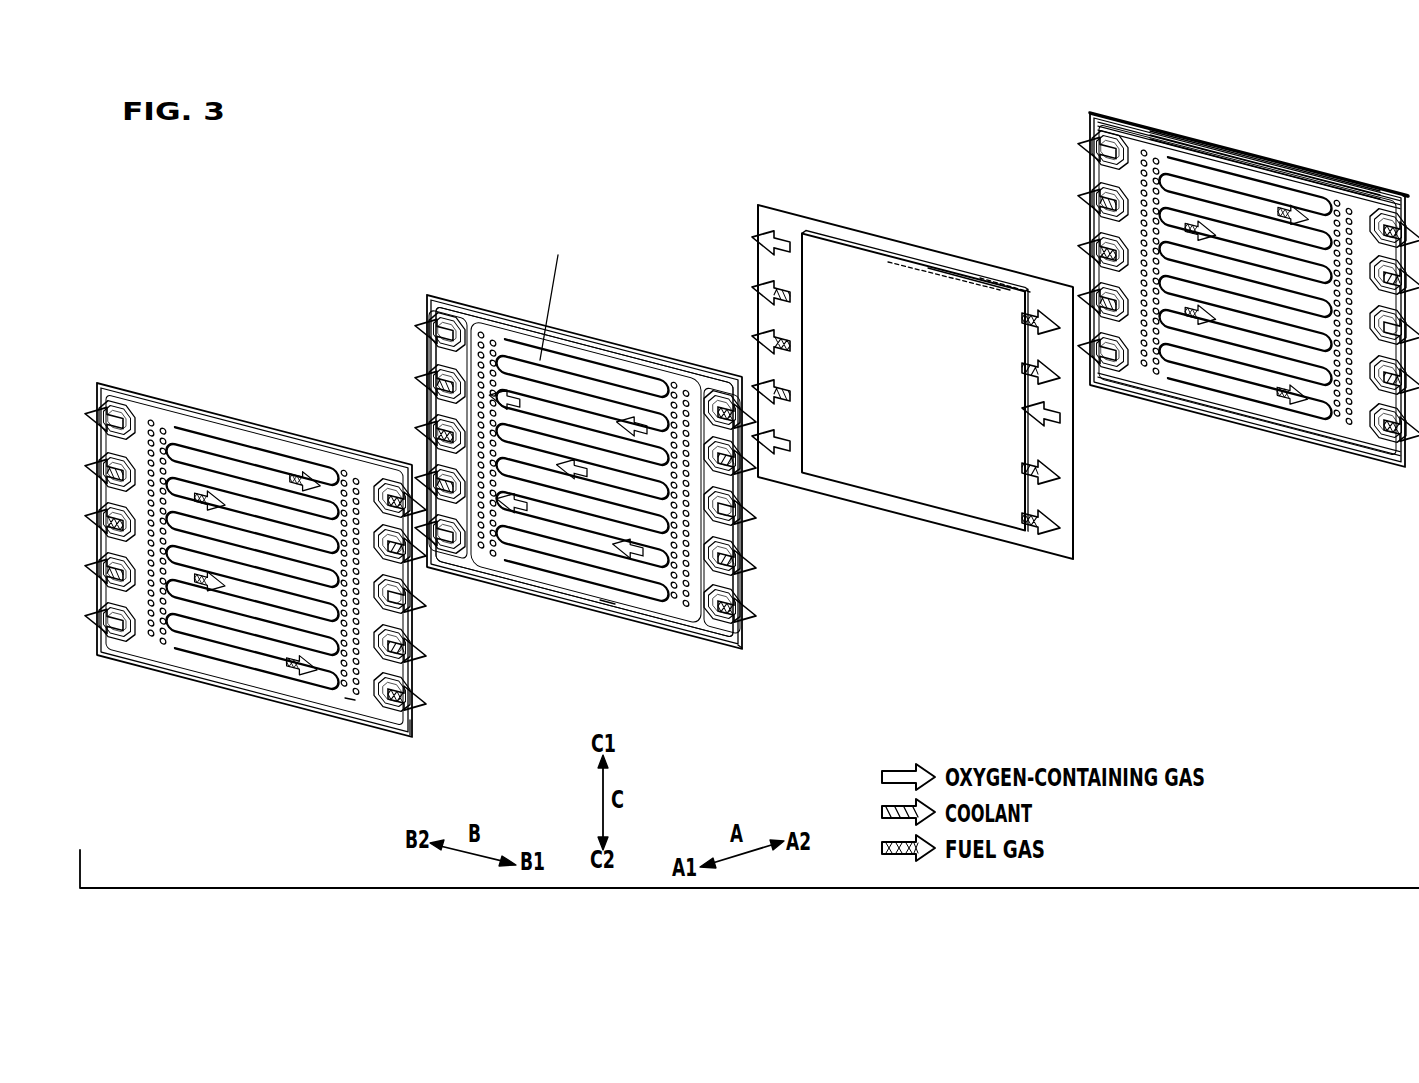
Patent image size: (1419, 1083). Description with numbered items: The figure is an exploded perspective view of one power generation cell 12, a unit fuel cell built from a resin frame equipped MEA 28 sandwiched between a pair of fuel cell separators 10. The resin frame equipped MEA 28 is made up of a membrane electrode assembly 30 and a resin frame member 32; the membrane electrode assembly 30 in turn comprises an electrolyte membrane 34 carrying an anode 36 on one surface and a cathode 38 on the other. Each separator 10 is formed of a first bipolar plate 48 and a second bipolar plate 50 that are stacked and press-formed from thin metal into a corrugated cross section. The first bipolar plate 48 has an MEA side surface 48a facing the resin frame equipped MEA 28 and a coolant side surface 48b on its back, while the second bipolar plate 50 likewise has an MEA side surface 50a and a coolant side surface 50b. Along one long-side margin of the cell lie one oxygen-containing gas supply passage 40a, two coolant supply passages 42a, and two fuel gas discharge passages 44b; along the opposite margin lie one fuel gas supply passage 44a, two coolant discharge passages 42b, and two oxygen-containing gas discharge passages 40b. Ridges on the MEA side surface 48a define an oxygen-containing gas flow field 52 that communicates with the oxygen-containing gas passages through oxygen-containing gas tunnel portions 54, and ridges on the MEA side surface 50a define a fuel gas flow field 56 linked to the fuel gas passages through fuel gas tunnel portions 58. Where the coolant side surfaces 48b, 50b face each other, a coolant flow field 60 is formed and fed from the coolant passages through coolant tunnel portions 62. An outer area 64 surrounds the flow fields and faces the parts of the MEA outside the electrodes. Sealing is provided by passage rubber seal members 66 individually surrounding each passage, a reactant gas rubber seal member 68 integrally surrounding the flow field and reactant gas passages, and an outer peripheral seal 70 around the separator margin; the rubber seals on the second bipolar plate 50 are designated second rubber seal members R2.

The power generation cell 12 is at (382, 143).
The fuel cell separator 10 is at (250, 240).
The first bipolar plate 48 is at (427, 298).
The second bipolar plate 50 is at (100, 378).
The resin frame equipped MEA 28 is at (962, 189).
The membrane electrode assembly 30 is at (931, 263).
The resin frame member 32 is at (888, 262).
The electrolyte membrane 34 is at (980, 278).
The anode 36 is at (858, 262).
The cathode 38 is at (822, 258).
The oxygen-containing gas supply passage 40a is at (385, 595).
The oxygen-containing gas discharge passage 40b is at (122, 412).
The coolant supply passage 42a is at (385, 545).
The coolant discharge passage 42b is at (133, 465).
The fuel gas supply passage 44a is at (427, 462).
The fuel gas discharge passage 44b is at (390, 490).
The MEA side surface 48a is at (725, 635).
The coolant side surface 48b is at (608, 598).
The MEA side surface 50a is at (350, 700).
The coolant side surface 50b is at (395, 723).
The oxygen-containing gas flow field 52 is at (555, 345).
The oxygen-containing gas tunnel portion 54 is at (462, 335).
The fuel gas flow field 56 is at (265, 660).
The fuel gas tunnel portion 58 is at (712, 408).
The coolant flow field 60 is at (537, 293).
The coolant tunnel portion 62 is at (487, 367).
The outer area 64 is at (1088, 117).
The passage rubber seal member 66 is at (1355, 210).
The reactant gas rubber seal member 68 is at (1257, 178).
The outer peripheral seal 70 is at (1222, 157).
The second rubber seal member R2 is at (1258, 420).